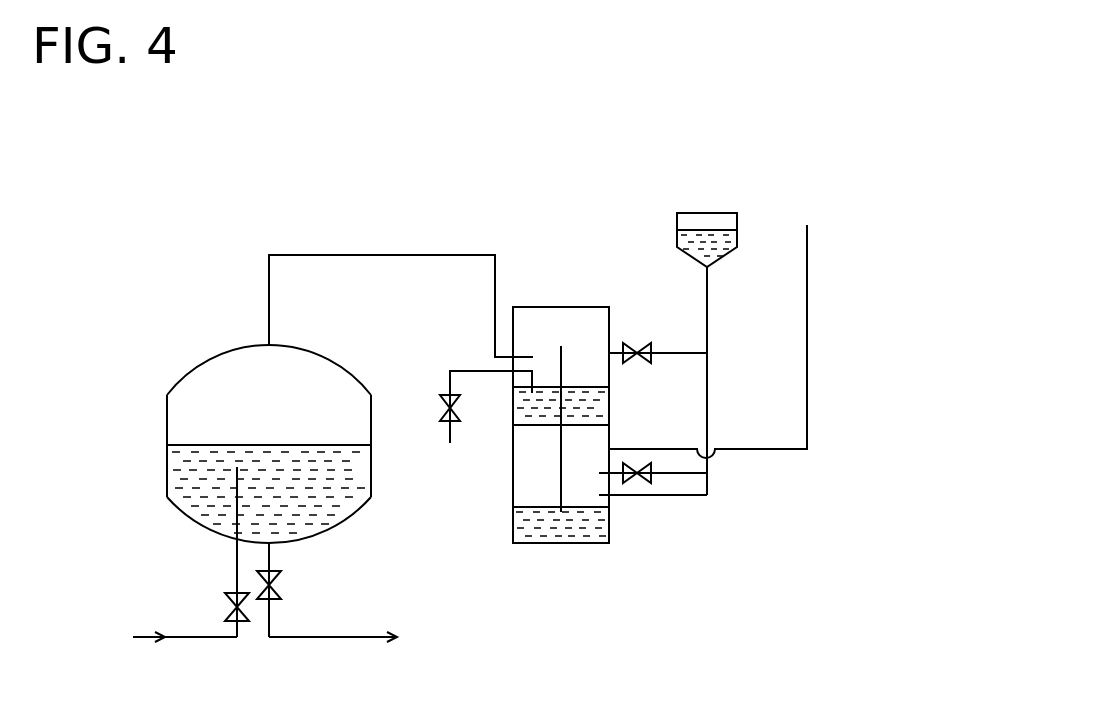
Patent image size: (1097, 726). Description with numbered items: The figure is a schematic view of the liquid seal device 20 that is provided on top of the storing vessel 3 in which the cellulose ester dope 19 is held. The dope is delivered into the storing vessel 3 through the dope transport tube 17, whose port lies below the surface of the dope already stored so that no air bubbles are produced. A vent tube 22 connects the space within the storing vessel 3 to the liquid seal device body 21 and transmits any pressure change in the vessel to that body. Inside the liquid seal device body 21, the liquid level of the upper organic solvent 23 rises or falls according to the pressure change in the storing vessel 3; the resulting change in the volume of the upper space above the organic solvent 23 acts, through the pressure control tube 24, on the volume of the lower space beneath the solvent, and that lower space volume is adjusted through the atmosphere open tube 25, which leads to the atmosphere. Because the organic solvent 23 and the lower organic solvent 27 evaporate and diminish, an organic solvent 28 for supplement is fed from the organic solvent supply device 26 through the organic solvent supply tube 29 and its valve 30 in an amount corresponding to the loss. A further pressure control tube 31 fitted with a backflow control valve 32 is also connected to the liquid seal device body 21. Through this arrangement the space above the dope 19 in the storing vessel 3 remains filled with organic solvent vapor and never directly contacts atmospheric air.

The storing vessel 3 is at (183, 375).
The dope transport tube 17 is at (233, 522).
The cellulose ester dope 19 is at (183, 483).
The liquid seal device 20 is at (579, 270).
The liquid seal device body 21 is at (520, 307).
The vent tube 22 is at (312, 251).
The upper organic solvent 23 is at (535, 410).
The pressure control tube 24 is at (560, 490).
The atmosphere open tube 25 is at (808, 305).
The organic solvent supply device 26 is at (738, 223).
The organic solvent 27 is at (537, 530).
The organic solvent for supplement 28 is at (727, 248).
The organic solvent supply tube 29 is at (668, 363).
The valve 30 is at (634, 342).
The pressure control tube 31 is at (482, 370).
The backflow control valve 32 is at (439, 392).